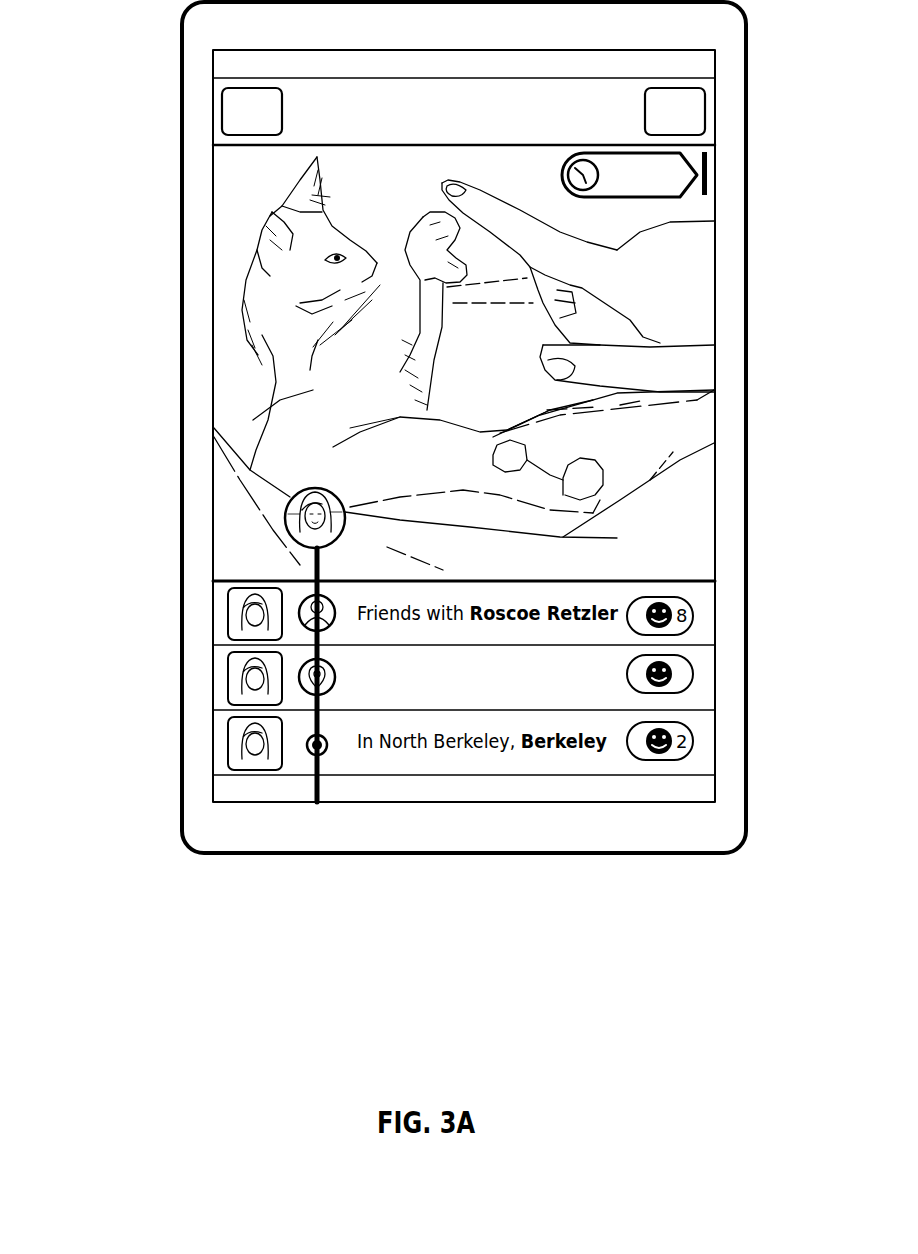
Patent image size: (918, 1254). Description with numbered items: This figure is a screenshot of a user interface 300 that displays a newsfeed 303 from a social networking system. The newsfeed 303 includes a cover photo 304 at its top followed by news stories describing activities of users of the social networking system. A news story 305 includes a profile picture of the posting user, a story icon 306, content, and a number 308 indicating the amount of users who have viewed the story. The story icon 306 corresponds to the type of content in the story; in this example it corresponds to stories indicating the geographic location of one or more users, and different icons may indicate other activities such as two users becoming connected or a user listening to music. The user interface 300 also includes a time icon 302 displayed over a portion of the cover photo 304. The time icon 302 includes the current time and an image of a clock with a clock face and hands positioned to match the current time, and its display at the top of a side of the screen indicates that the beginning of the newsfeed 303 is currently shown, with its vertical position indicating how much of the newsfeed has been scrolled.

The user interface 300 is at (180, 52).
The time icon 302 is at (713, 175).
The newsfeed 303 is at (715, 812).
The cover photo 304 is at (197, 160).
The news story 305 is at (454, 677).
The story icon 306 is at (337, 673).
The number 308 is at (693, 680).